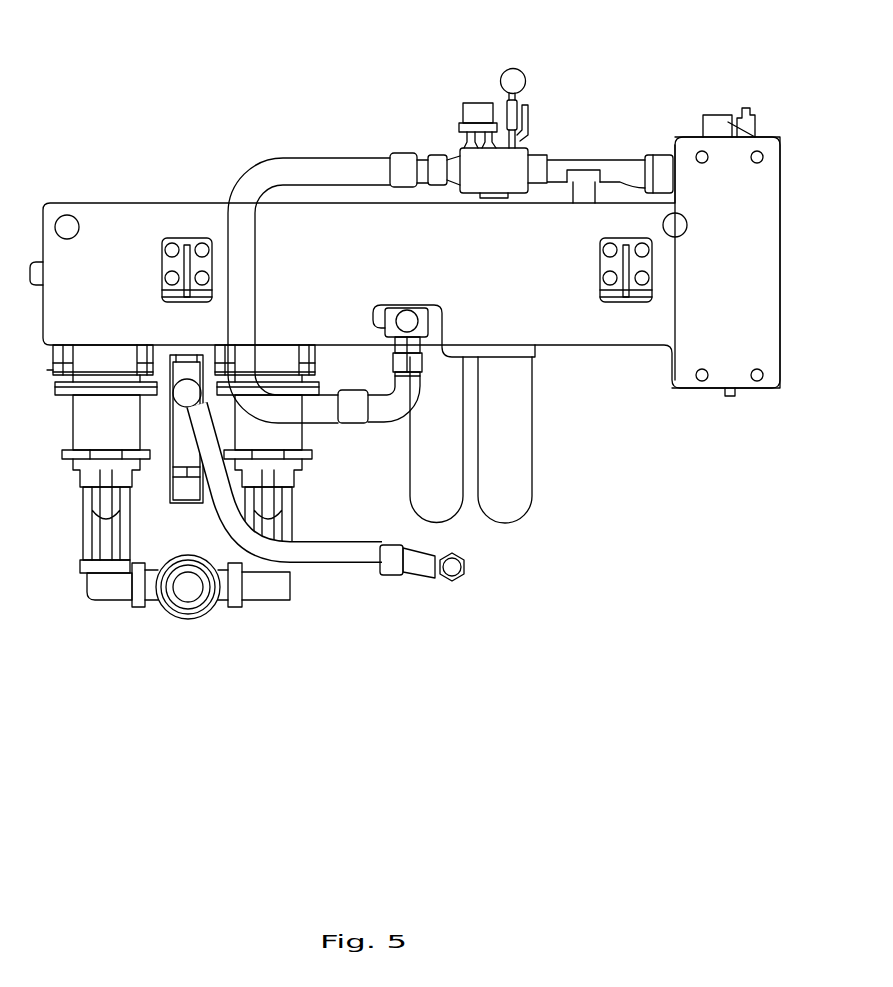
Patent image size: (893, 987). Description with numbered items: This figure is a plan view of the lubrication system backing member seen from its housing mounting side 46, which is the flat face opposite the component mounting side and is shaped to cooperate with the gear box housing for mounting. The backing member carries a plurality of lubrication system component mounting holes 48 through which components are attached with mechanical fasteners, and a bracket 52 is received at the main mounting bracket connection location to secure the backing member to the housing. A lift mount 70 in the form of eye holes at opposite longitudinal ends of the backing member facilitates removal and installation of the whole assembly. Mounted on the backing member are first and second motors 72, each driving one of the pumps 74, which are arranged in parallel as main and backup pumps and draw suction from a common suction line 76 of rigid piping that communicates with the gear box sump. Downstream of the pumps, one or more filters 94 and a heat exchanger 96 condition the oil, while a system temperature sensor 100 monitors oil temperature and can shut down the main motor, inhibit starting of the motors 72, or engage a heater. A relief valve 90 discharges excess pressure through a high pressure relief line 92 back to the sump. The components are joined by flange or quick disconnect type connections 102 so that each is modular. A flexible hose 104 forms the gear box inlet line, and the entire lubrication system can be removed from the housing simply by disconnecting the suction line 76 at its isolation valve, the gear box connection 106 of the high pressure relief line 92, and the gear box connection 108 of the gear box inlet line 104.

The housing mounting side 46 is at (403, 275).
The lubrication system component mounting holes 48 is at (710, 158).
The bracket 52 is at (190, 244).
The lift mount 70 is at (64, 215).
The motors 72 is at (112, 357).
The pumps 74 is at (110, 505).
The common suction line 76 is at (190, 620).
The relief valve 90 is at (183, 425).
The high pressure relief line 92 is at (328, 562).
The filters 94 is at (517, 512).
The heat exchanger 96 is at (735, 128).
The system temperature sensor 100 is at (488, 160).
The quick disconnect type connections 102 is at (672, 160).
The flexible hose 104 is at (345, 166).
The gear box connection of the high pressure relief line 106 is at (453, 587).
The gear box connection of the gear box inlet line 108 is at (442, 322).